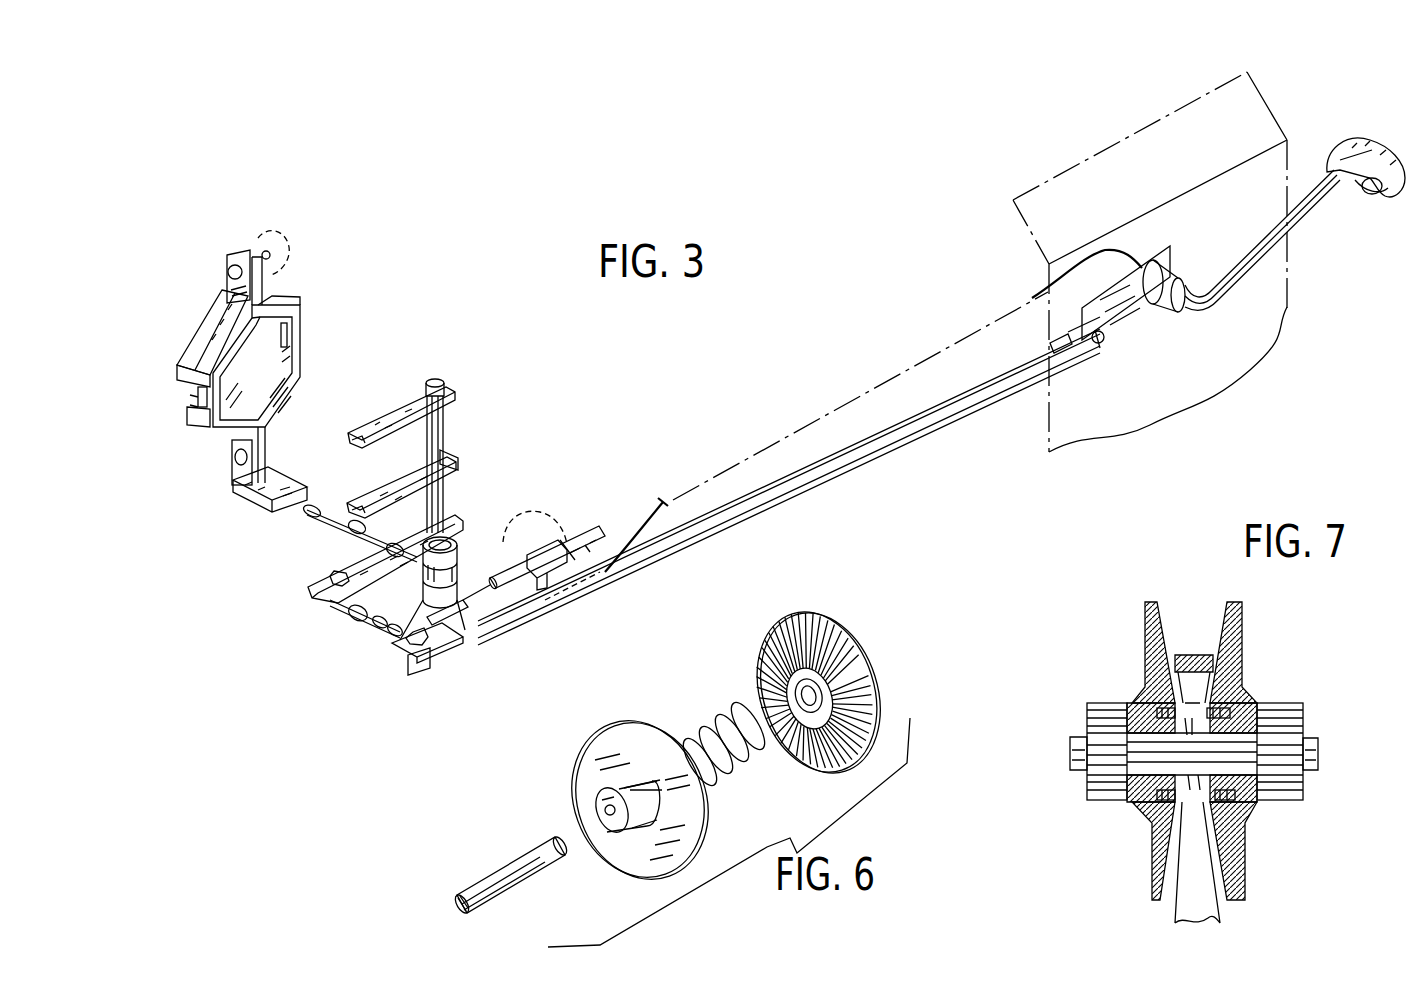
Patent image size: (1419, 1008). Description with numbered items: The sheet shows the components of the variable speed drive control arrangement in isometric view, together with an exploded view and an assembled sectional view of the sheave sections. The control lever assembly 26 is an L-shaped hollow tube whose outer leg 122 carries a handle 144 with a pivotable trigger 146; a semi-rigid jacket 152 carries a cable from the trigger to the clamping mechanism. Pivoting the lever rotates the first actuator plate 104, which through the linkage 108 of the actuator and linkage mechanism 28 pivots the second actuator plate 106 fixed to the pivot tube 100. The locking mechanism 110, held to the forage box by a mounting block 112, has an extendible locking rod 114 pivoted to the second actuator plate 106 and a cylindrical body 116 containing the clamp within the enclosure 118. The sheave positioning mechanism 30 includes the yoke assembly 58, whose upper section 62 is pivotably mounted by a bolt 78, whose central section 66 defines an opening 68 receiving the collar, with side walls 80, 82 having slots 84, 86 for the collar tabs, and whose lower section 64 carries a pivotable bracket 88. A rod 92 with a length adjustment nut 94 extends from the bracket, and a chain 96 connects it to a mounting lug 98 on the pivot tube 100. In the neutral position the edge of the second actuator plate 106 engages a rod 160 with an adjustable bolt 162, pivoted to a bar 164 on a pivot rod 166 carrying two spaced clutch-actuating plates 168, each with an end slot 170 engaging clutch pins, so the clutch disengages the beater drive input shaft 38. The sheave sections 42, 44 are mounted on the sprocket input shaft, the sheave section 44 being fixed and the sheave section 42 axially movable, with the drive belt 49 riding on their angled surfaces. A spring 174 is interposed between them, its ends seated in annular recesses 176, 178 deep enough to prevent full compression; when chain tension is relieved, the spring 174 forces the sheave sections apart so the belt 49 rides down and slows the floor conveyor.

In FIG. 3, the control lever assembly 26 is at (1331, 277).
In FIG. 3, the actuator and linkage mechanism 28 is at (859, 490).
In FIG. 3, the sheave positioning mechanism 30 is at (219, 585).
In FIG. 6, the beater drive input shaft 38 is at (483, 877).
In FIG. 7, the beater drive input shaft 38 is at (1308, 735).
In FIG. 6, the sheave section 42 is at (556, 794).
In FIG. 7, the sheave section 42 is at (1141, 873).
In FIG. 6, the sheave section 44 is at (878, 662).
In FIG. 7, the sheave section 44 is at (1255, 853).
In FIG. 7, the drive belt 49 is at (1203, 655).
In FIG. 3, the yoke assembly 58 is at (297, 287).
In FIG. 3, the upper section 62 is at (238, 255).
In FIG. 3, the lower section 64 is at (238, 478).
In FIG. 3, the central section 66 is at (319, 350).
In FIG. 3, the opening 68 is at (233, 384).
In FIG. 3, the bolt 78 is at (264, 251).
In FIG. 3, the side wall 80 is at (198, 377).
In FIG. 3, the side wall 82 is at (294, 335).
In FIG. 3, the slot 84 is at (185, 410).
In FIG. 3, the slot 86 is at (300, 355).
In FIG. 3, the bracket 88 is at (285, 480).
In FIG. 3, the rod 92 is at (360, 527).
In FIG. 3, the length adjustment nut 94 is at (303, 510).
In FIG. 3, the chain 96 is at (418, 555).
In FIG. 3, the mounting lug 98 is at (455, 590).
In FIG. 3, the pivot tube 100 is at (452, 535).
In FIG. 3, the first actuator plate 104 is at (1135, 318).
In FIG. 3, the second actuator plate 106 is at (415, 665).
In FIG. 3, the linkage 108 is at (855, 445).
In FIG. 3, the locking mechanism 110 is at (582, 528).
In FIG. 3, the mounting block 112 is at (547, 520).
In FIG. 3, the locking rod 114 is at (498, 630).
In FIG. 3, the cylindrical body 116 is at (505, 590).
In FIG. 3, the enclosure 118 is at (562, 590).
In FIG. 3, the outer leg 122 is at (1305, 220).
In FIG. 3, the handle 144 is at (1388, 144).
In FIG. 3, the trigger 146 is at (1372, 200).
In FIG. 3, the jacket 152 is at (1080, 263).
In FIG. 3, the rod 160 is at (344, 625).
In FIG. 3, the adjustable bolt 162 is at (380, 640).
In FIG. 3, the bar 164 is at (330, 583).
In FIG. 3, the pivot rod 166 is at (457, 487).
In FIG. 3, the clutch-actuating plates 168 is at (393, 468).
In FIG. 3, the slot 170 is at (348, 447).
In FIG. 6, the spring 174 is at (767, 748).
In FIG. 7, the spring 174 is at (1187, 710).
In FIG. 7, the annular recess 176 is at (1150, 820).
In FIG. 7, the annular recess 178 is at (1230, 698).